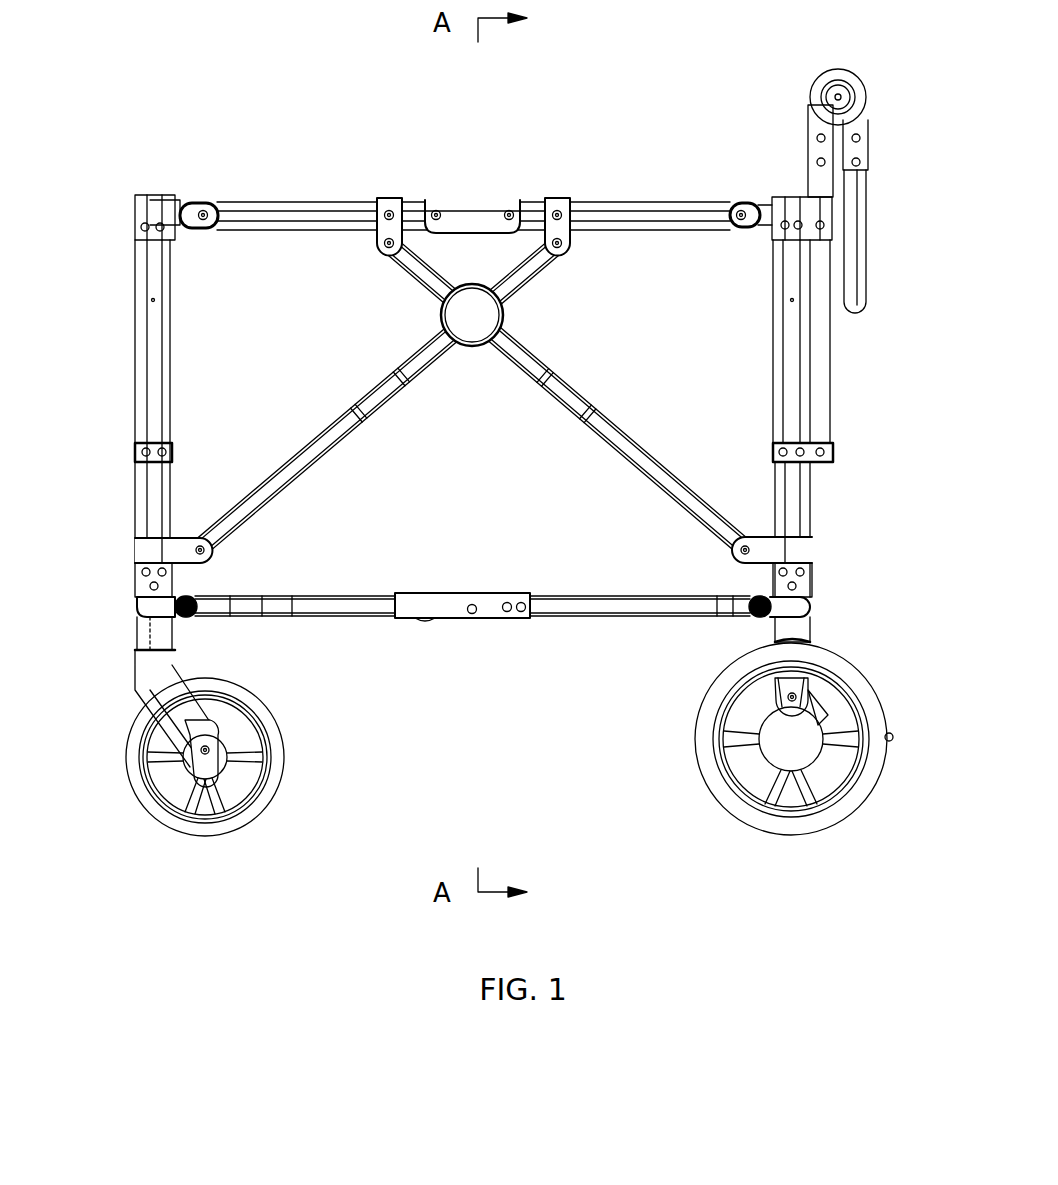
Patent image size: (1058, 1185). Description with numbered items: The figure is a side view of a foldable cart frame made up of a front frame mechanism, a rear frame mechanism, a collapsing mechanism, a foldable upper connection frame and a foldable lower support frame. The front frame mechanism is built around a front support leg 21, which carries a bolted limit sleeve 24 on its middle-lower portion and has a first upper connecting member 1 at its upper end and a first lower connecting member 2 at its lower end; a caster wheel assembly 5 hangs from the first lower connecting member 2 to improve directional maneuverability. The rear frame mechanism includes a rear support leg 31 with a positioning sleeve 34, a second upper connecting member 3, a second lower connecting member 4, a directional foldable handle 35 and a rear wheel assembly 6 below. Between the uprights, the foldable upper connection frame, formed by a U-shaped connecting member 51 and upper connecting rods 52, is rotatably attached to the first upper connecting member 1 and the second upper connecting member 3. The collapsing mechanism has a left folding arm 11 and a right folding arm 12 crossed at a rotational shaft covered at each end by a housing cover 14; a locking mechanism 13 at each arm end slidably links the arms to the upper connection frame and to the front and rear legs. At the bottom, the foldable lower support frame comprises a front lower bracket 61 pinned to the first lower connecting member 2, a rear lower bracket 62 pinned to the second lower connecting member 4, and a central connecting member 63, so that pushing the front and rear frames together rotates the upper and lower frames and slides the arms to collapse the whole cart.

The first upper connecting member 1 is at (152, 220).
The upper connecting rods 52 is at (257, 215).
The locking mechanism 13 is at (392, 232).
The U-shaped connecting member 51 is at (475, 210).
The directional foldable handle 35 is at (823, 148).
The second upper connecting member 3 is at (803, 218).
The left folding arm 11 is at (415, 277).
The right folding arm 12 is at (518, 277).
The housing cover 14 is at (472, 318).
The limit sleeve 24 is at (140, 463).
The front support leg 21 is at (155, 503).
The positioning sleeve 34 is at (810, 453).
The rear support leg 31 is at (793, 503).
The first lower connecting member 2 is at (147, 608).
The second lower connecting member 4 is at (810, 605).
The front lower bracket 61 is at (170, 663).
The rear lower bracket 62 is at (757, 622).
The caster wheel assembly 5 is at (203, 757).
The central connecting member 63 is at (452, 607).
The rear wheel assembly 6 is at (803, 753).